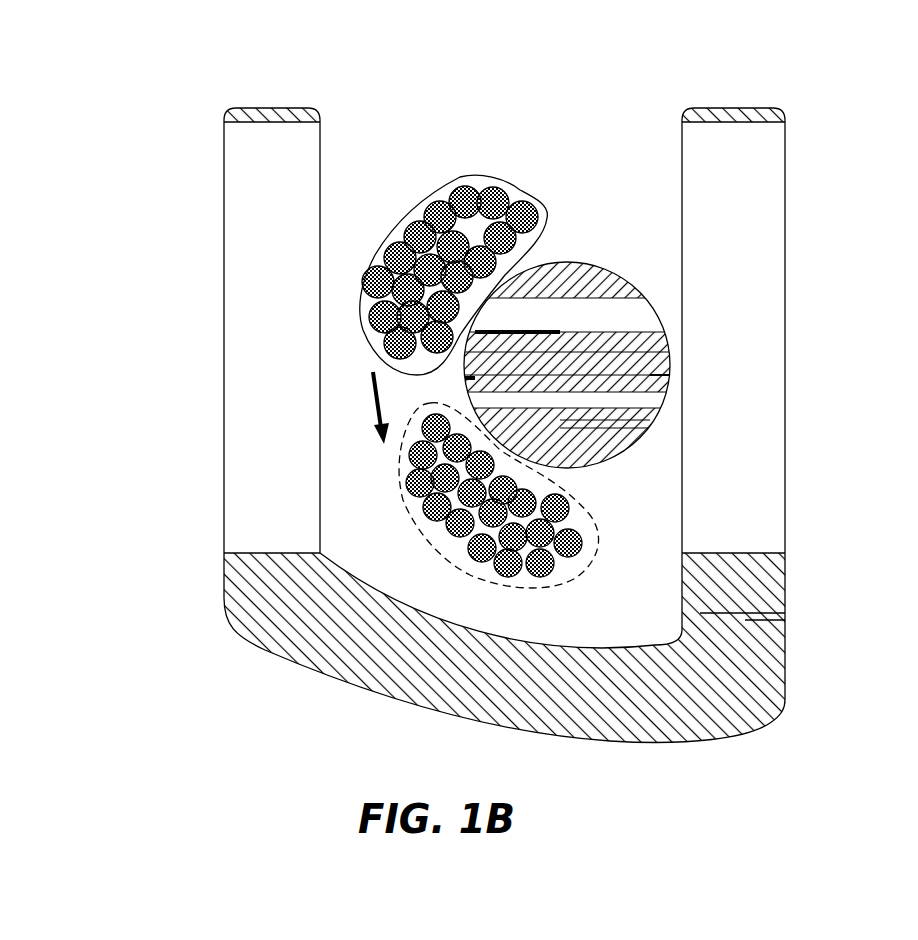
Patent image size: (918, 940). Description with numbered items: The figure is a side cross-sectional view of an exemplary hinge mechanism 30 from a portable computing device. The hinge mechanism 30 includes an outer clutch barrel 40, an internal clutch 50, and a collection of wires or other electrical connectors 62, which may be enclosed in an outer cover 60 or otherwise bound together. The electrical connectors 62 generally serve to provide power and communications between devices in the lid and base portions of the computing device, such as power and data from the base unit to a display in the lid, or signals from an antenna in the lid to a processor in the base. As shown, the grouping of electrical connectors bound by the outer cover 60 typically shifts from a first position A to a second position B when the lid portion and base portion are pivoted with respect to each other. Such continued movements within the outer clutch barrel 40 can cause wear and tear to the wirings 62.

The hinge mechanism 30 is at (116, 75).
The outer clutch barrel 40 is at (242, 342).
The internal clutch 50 is at (594, 299).
The outer cover 60 is at (464, 243).
The electrical connectors 62 is at (445, 207).